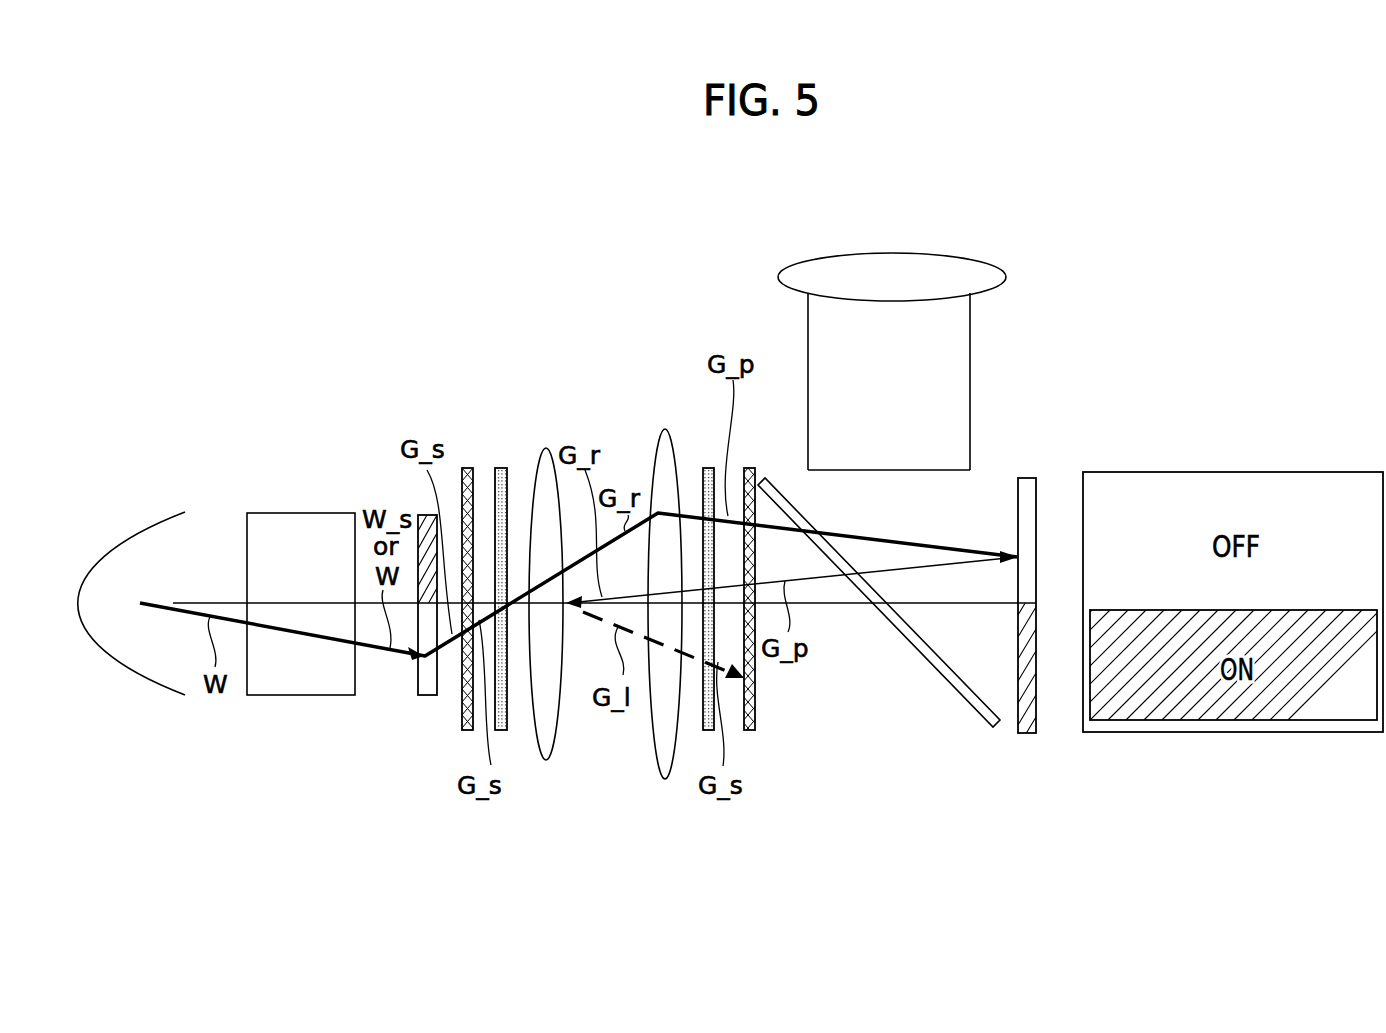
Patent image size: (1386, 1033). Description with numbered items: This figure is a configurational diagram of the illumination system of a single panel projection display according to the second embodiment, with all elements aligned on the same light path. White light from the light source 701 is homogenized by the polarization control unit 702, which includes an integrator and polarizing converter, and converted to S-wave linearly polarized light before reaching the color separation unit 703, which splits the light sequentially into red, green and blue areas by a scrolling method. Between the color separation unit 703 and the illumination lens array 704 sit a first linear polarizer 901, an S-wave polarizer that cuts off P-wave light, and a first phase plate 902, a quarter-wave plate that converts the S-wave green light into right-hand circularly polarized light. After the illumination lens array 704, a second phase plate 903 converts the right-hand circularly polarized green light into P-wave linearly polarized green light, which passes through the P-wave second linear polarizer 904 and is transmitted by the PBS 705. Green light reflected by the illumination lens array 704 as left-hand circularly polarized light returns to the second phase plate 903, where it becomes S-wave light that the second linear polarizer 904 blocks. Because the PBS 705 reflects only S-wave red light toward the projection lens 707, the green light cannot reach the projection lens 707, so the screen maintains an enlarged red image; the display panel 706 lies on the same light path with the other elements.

The light source 701 is at (145, 533).
The polarization control unit 702 is at (295, 513).
The color separation unit 703 is at (427, 695).
The illumination lens array 704 is at (658, 745).
The PBS 705 is at (975, 715).
The display panel 706 is at (1023, 476).
The projection lens 707 is at (1007, 277).
The first linear polarizer 901 is at (463, 466).
The first phase plate 902 is at (500, 466).
The second phase plate 903 is at (706, 466).
The second linear polarizer 904 is at (750, 466).